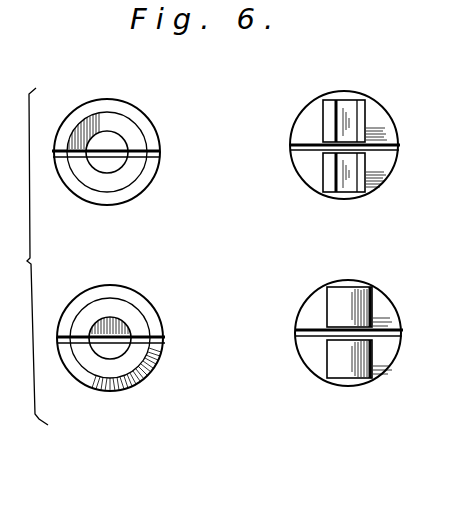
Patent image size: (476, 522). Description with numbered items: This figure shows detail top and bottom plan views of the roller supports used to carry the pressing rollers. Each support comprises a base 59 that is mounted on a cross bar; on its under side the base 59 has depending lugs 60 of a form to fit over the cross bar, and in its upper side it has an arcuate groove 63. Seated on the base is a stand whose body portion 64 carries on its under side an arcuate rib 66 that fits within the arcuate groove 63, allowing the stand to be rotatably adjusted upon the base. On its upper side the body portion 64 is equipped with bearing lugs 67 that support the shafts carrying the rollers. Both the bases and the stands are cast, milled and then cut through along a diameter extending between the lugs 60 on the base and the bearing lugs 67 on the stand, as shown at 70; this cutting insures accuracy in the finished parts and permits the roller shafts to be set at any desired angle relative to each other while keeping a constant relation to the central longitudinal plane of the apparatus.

The base 59 is at (239, 143).
The diametral cut 70 is at (160, 150).
The arcuate groove 63 is at (120, 176).
The arcuate rib 66 is at (123, 310).
The body portion 64 is at (240, 335).
The depending lugs 60 is at (325, 100).
The bearing lugs 67 is at (365, 297).